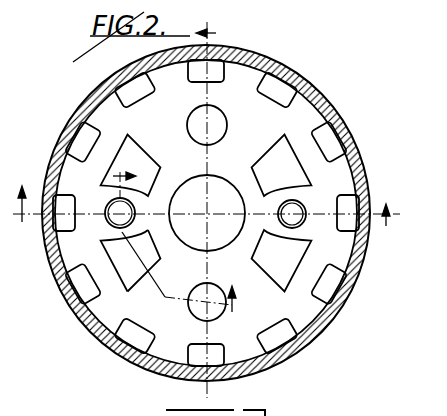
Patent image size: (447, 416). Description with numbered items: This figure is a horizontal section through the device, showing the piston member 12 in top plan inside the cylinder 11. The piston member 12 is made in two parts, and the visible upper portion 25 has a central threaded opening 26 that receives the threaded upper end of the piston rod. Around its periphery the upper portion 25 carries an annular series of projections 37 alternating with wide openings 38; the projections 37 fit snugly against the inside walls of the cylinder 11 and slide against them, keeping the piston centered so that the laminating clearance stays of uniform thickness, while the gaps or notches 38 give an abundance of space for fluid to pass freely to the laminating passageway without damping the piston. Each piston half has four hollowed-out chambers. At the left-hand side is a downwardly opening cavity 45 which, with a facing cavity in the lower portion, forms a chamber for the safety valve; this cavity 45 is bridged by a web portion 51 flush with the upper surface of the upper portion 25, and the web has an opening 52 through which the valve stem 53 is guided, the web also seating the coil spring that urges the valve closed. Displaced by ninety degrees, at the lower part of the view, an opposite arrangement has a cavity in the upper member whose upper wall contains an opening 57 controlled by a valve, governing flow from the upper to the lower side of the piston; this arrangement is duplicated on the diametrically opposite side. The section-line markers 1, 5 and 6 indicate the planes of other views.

The section line 1- 1 is at (206, 117).
The section line 5- 5 is at (183, 234).
The section arrow 6 is at (392, 216).
The cylinder 11 is at (82, 104).
The piston member 12 is at (105, 315).
The upper portion of the piston 25 is at (303, 115).
The central threaded opening 26 is at (218, 178).
The projections 37 is at (72, 170).
The openings 38 is at (271, 88).
The cavity 45 is at (150, 246).
The web portion 51 is at (104, 240).
The opening 52 is at (161, 166).
The valve stem 53 is at (134, 215).
The opening 57 is at (187, 304).